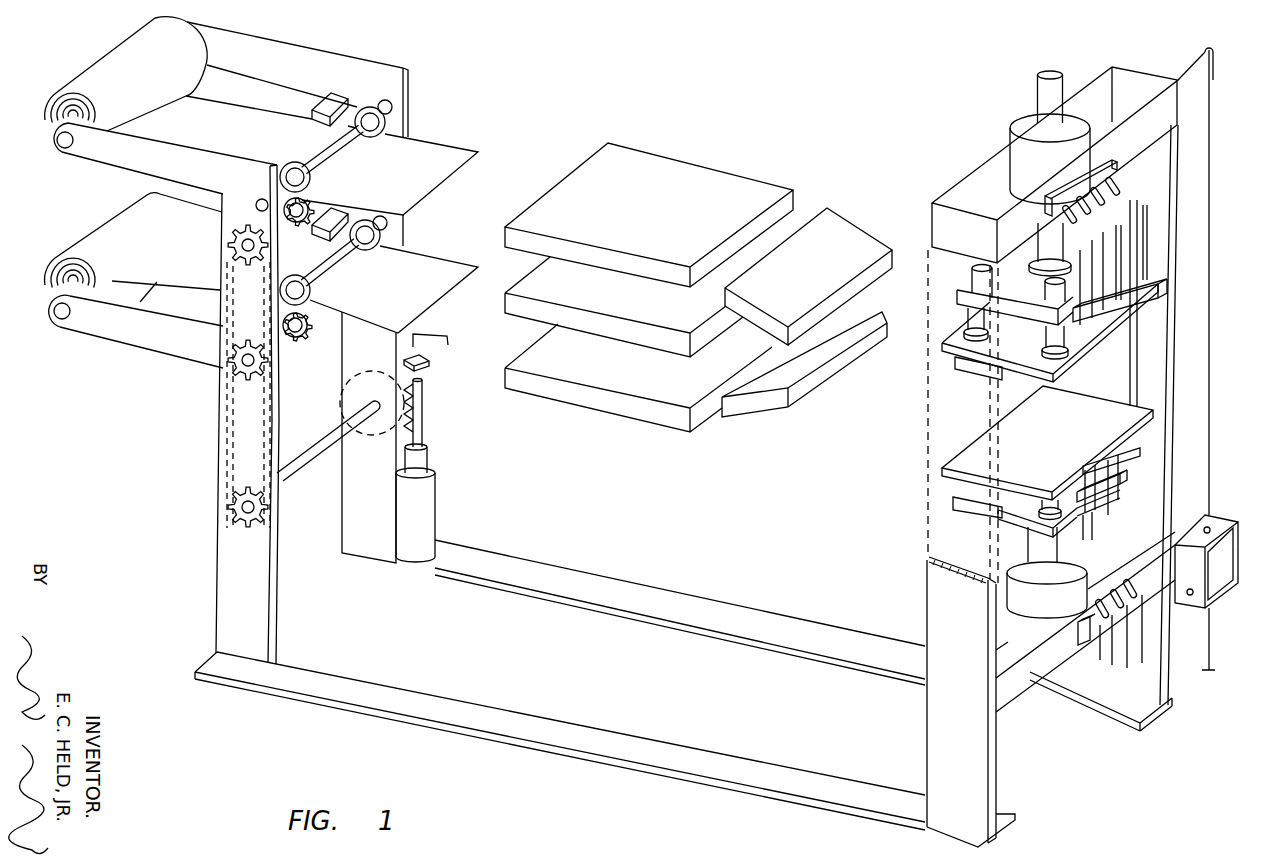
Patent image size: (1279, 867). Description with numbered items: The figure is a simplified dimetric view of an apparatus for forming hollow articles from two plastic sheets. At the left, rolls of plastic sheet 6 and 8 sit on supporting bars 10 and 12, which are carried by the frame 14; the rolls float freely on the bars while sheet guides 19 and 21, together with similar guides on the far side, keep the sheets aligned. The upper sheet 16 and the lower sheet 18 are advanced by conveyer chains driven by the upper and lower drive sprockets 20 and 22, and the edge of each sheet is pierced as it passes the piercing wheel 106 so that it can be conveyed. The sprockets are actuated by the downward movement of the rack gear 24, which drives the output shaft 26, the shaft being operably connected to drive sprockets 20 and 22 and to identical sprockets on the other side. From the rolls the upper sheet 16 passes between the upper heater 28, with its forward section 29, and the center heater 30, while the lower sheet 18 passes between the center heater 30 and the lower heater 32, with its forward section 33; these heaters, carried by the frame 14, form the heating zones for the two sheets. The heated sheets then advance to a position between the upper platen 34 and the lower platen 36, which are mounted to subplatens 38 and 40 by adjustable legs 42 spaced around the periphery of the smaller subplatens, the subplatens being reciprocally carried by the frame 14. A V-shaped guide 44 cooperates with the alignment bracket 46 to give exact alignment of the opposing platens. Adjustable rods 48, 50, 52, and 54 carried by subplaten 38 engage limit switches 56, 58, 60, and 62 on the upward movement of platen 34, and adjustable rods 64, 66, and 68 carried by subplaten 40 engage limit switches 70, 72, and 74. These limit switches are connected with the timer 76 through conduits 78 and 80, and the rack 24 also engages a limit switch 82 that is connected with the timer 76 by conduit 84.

The roll of plastic sheet 6 is at (50, 106).
The roll of plastic sheet 8 is at (50, 272).
The supporting bar 10 is at (62, 152).
The supporting bar 12 is at (54, 324).
The frame 14 is at (211, 183).
The upper sheet 16 is at (458, 153).
The lower sheet 18 is at (426, 265).
The sheet guide 19 is at (316, 104).
The upper drive sprocket 20 is at (312, 224).
The sheet guide 21 is at (337, 217).
The lower drive sprocket 22 is at (312, 318).
The rack gear 24 is at (425, 430).
The output shaft 26 is at (290, 482).
The upper heater 28 is at (702, 172).
The forward section 29 is at (850, 230).
The center heater 30 is at (608, 302).
The lower heater 32 is at (627, 407).
The forward section 33 is at (765, 407).
The upper platen 34 is at (963, 335).
The lower platen 36 is at (1037, 450).
The subplaten 38 is at (1012, 315).
The subplaten 40 is at (1020, 520).
The adjustable leg 42 is at (1133, 292).
The V-shaped guide 44 is at (1150, 350).
The alignment bracket 46 is at (988, 488).
The adjustable rod 48 is at (1066, 280).
The adjustable rod 50 is at (1072, 275).
The adjustable rod 52 is at (1130, 265).
The adjustable rod 54 is at (1136, 220).
The limit switch 56 is at (1044, 217).
The limit switch 58 is at (1085, 203).
The limit switch 60 is at (1116, 191).
The limit switch 62 is at (1110, 157).
The adjustable rod 64 is at (1090, 538).
The adjustable rod 66 is at (1115, 510).
The adjustable rod 68 is at (1120, 500).
The limit switch 70 is at (1082, 637).
The limit switch 72 is at (1088, 600).
The limit switch 74 is at (1118, 585).
The timer 76 is at (1220, 512).
The conduit 78 is at (1212, 183).
The conduit 80 is at (1142, 630).
The limit switch 82 is at (427, 364).
The conduit 84 is at (437, 333).
The piercing wheel 106 is at (372, 139).